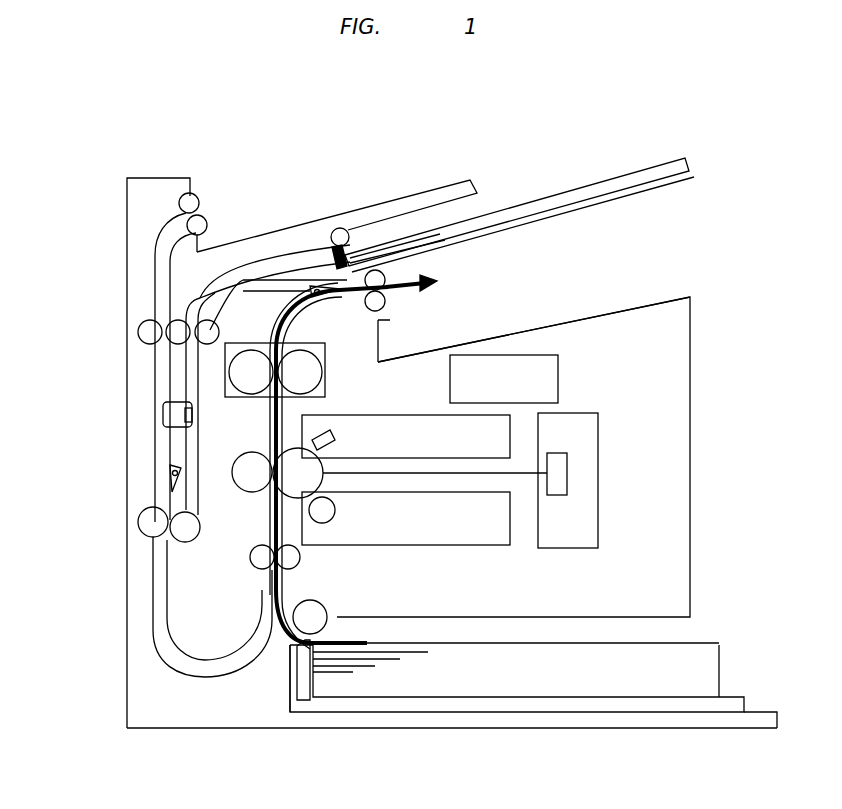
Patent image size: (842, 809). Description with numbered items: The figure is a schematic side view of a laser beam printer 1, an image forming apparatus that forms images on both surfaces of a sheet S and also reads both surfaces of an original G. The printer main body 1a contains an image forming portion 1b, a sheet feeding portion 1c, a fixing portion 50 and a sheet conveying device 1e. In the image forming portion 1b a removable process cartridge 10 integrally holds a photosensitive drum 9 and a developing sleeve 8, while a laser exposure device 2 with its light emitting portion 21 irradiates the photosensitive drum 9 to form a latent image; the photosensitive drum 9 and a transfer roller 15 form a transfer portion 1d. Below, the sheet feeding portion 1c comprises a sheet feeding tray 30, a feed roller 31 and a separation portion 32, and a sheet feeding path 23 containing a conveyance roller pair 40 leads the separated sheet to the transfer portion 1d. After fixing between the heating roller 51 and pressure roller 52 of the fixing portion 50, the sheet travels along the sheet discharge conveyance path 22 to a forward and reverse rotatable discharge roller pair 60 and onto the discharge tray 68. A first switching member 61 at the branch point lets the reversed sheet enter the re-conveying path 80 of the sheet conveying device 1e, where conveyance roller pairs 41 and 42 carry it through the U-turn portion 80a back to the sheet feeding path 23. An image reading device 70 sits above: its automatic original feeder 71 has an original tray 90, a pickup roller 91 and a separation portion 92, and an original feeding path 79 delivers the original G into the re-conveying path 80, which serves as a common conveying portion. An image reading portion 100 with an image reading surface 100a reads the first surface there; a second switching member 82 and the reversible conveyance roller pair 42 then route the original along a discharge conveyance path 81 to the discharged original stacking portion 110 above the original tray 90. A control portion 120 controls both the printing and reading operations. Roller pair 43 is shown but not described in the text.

The laser beam printer 1 is at (520, 128).
The printer main body 1a is at (683, 428).
The image forming portion 1b is at (406, 405).
The sheet feeding portion 1c is at (276, 652).
The transfer portion 1d is at (254, 516).
The sheet conveying device 1e is at (186, 562).
The laser exposure device 2 is at (598, 427).
The developing sleeve 8 is at (335, 507).
The photosensitive drum 9 is at (335, 442).
The process cartridge 10 is at (476, 547).
The transfer roller 15 is at (238, 478).
The light emitting portion 21 is at (567, 474).
The sheet discharge conveyance path 22 is at (290, 305).
The sheet feeding path 23 is at (268, 598).
The sheet feeding tray 30 is at (740, 695).
The feed roller 31 is at (327, 612).
The separation portion 32 is at (300, 695).
The conveyance roller pair 40 is at (300, 559).
The conveyance roller pair 41 is at (172, 320).
The conveyance roller pair 42 is at (148, 528).
The reverse roller pair 43 is at (193, 194).
The fixing portion 50 is at (322, 387).
The heating roller 51 is at (325, 360).
The pressure roller 52 is at (248, 394).
The discharge roller pair 60 is at (386, 296).
The first switching member 61 is at (390, 320).
The discharge tray 68 is at (613, 311).
The image reading device 70 is at (364, 178).
The automatic original feeder 71 is at (345, 216).
The original feeding path 79 is at (245, 252).
The re-conveying path 80 is at (198, 372).
The U-turn portion 80a is at (182, 663).
The discharge conveyance path 81 is at (160, 368).
The second switching member 82 is at (170, 478).
The original tray 90 is at (563, 193).
The pickup roller 91 is at (346, 230).
The separation portion 92 is at (362, 262).
The image reading portion 100 is at (163, 412).
The image reading surface 100a is at (188, 418).
The discharged original stacking portion 110 is at (440, 183).
The control portion 120 is at (558, 372).
The original G is at (638, 169).
The sheet S is at (305, 300).